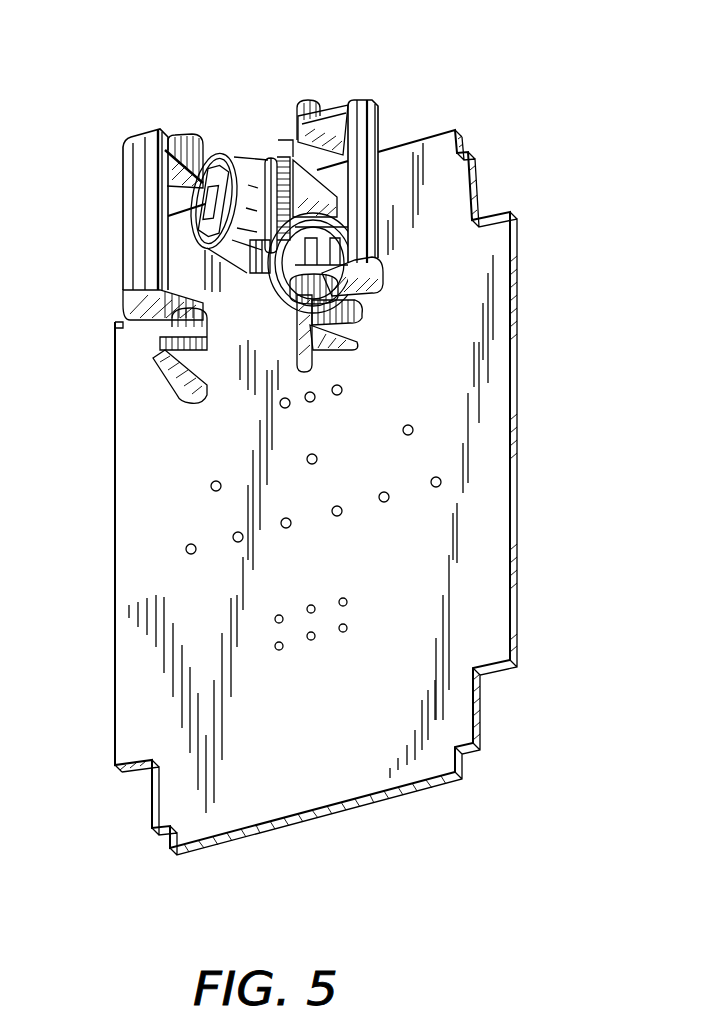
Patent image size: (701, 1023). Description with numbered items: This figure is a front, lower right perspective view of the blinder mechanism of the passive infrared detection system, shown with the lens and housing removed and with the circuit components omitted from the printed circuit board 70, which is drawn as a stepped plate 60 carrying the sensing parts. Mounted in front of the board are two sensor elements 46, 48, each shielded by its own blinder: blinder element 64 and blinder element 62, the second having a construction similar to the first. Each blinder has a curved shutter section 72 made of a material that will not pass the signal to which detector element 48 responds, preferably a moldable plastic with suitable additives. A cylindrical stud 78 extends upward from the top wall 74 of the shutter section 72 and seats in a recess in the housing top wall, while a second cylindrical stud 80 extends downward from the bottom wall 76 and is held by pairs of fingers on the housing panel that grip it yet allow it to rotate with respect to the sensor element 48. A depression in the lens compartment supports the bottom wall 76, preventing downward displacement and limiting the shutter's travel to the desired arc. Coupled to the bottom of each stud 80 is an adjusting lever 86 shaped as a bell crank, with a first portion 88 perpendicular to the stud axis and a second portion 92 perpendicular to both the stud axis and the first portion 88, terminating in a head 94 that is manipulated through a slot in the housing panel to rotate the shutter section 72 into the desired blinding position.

The sensor element 46 is at (345, 210).
The sensor element 48 is at (243, 158).
The mounting plate 60 is at (518, 600).
The blinder element 62 is at (372, 243).
The blinder element 64 is at (106, 209).
The printed circuit board 70 is at (517, 530).
The shutter section 72 is at (133, 201).
The top wall 74 is at (174, 140).
The bottom wall 76 is at (170, 320).
The cylindrical stud 78 is at (193, 132).
The second cylindrical stud 80 is at (302, 333).
The adjusting lever 86 is at (167, 387).
The first portion 88 is at (340, 348).
The second portion 92 is at (168, 350).
The head 94 is at (373, 313).